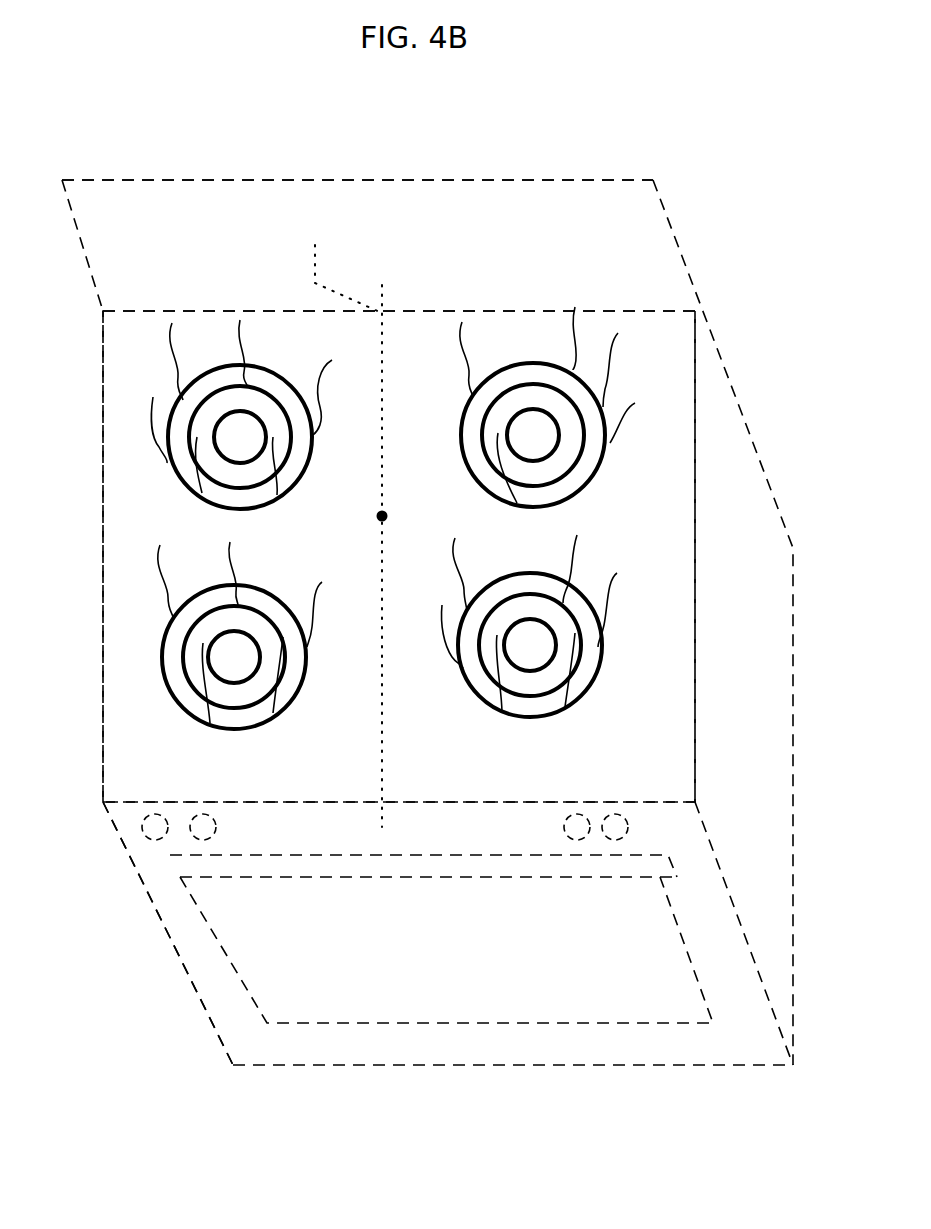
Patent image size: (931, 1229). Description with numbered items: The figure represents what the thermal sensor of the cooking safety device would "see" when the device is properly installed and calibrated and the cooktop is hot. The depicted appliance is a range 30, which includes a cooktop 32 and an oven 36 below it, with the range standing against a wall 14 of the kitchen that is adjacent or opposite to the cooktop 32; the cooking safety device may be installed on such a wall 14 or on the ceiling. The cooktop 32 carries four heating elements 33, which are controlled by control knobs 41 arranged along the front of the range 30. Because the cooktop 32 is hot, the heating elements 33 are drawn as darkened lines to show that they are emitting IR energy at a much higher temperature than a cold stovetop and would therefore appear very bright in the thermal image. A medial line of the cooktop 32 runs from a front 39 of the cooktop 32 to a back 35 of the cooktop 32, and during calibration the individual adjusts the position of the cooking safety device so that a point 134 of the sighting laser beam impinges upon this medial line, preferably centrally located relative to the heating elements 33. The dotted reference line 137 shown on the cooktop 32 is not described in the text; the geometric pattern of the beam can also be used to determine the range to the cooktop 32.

The wall 14 is at (427, 598).
The range 30 is at (448, 688).
The cooktop 32 is at (628, 487).
The heating elements 33 is at (515, 360).
The back 35 is at (150, 192).
The oven 36 is at (441, 939).
The front 39 is at (208, 962).
The control knobs 41 is at (155, 830).
The point 134 is at (390, 516).
The reference line on cooktop 137 is at (322, 535).